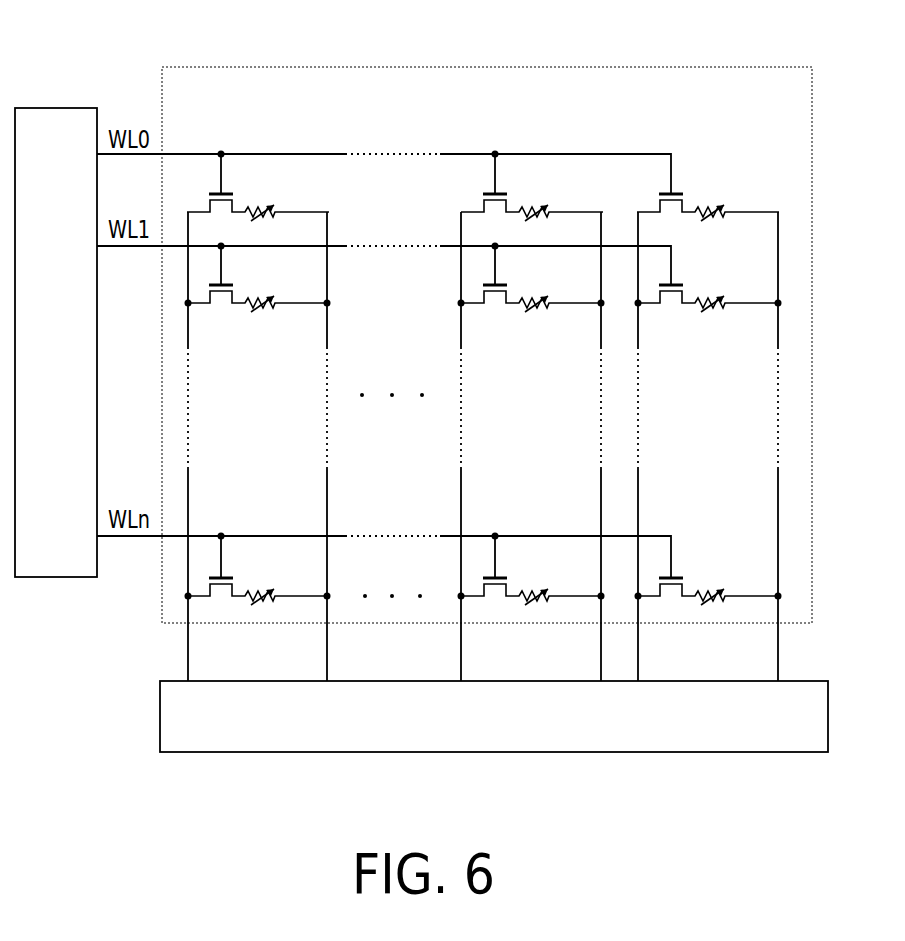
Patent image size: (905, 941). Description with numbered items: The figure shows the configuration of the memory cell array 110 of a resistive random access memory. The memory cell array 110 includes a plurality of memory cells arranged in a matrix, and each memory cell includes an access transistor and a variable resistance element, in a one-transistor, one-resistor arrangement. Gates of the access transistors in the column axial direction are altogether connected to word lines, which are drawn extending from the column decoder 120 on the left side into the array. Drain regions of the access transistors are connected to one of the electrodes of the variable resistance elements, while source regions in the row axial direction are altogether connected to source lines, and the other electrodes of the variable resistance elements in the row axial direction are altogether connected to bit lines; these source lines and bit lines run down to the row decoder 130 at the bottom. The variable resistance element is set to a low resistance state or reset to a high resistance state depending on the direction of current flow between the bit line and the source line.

The memory cell array 110 is at (762, 67).
The column decoder 120 is at (58, 108).
The row decoder 130 is at (160, 720).